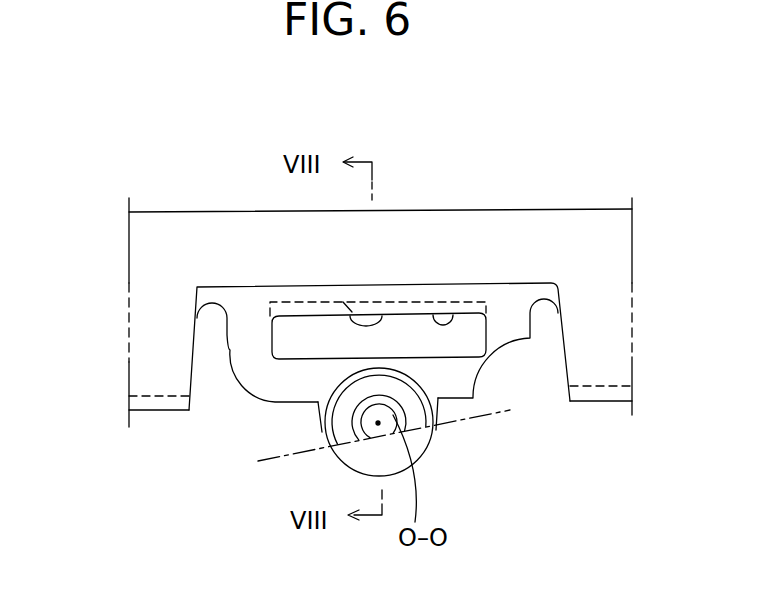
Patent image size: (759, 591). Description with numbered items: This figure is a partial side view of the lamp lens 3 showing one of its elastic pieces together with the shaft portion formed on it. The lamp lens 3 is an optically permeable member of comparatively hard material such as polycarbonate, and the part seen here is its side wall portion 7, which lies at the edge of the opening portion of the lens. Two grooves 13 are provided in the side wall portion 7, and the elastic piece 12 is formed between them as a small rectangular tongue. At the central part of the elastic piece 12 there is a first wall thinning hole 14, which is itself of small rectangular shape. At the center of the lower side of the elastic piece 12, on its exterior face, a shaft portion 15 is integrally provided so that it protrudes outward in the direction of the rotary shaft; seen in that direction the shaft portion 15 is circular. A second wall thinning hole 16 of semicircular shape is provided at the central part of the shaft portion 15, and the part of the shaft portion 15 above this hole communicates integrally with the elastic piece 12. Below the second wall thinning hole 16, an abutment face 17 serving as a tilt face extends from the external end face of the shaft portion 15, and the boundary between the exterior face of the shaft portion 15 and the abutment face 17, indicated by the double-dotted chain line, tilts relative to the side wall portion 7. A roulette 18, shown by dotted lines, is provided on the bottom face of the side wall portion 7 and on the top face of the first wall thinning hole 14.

The lamp lens 3 is at (190, 211).
The side wall portion 7 is at (258, 248).
The elastic piece 12 is at (273, 385).
The groove 13 is at (195, 375).
The first wall thinning hole 14 is at (434, 318).
The shaft portion 15 is at (433, 443).
The second wall thinning hole 16 is at (381, 426).
The abutment face 17 is at (358, 457).
The roulette 18 is at (387, 312).